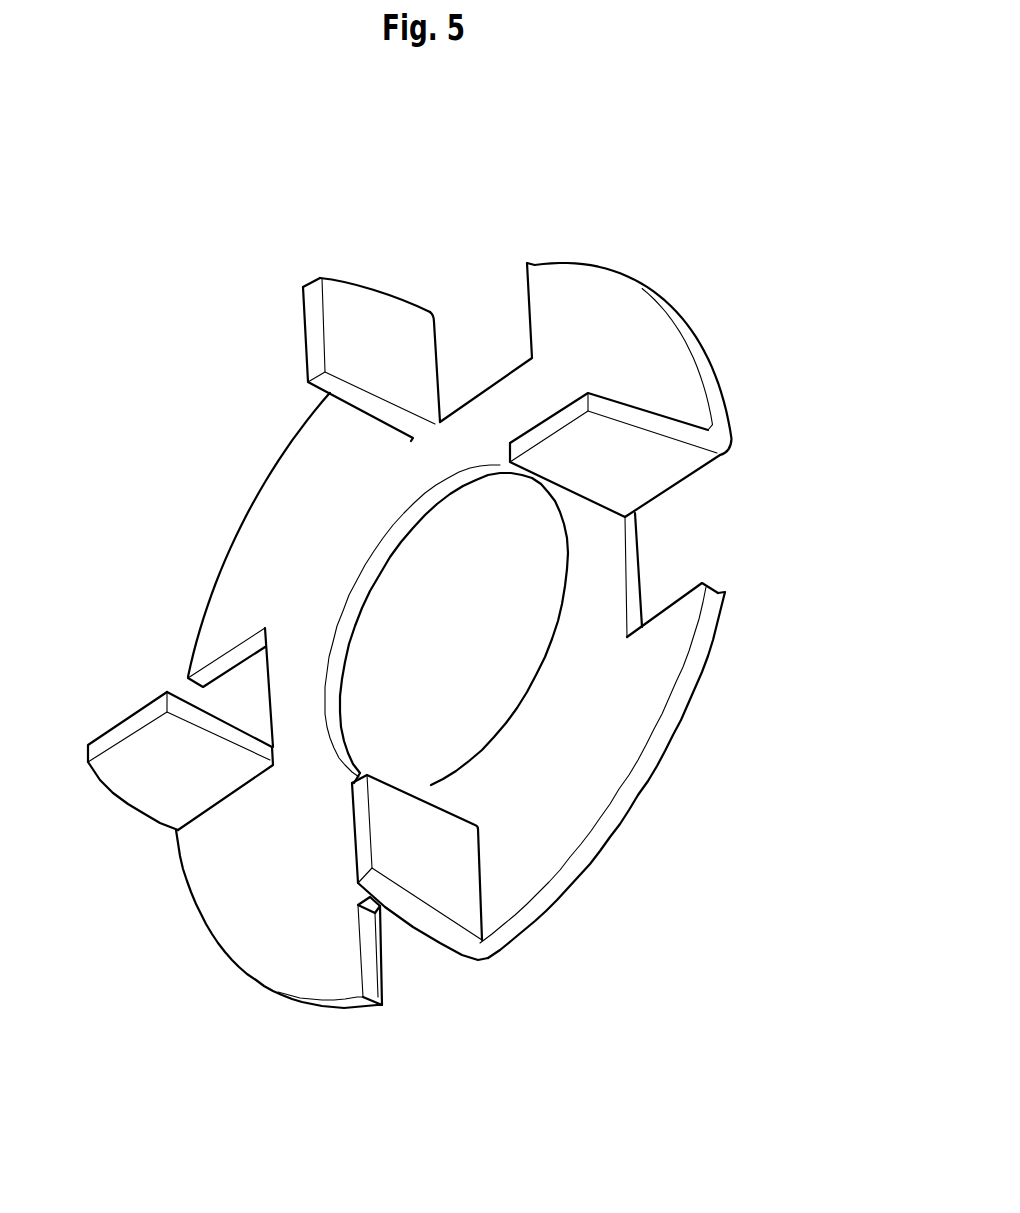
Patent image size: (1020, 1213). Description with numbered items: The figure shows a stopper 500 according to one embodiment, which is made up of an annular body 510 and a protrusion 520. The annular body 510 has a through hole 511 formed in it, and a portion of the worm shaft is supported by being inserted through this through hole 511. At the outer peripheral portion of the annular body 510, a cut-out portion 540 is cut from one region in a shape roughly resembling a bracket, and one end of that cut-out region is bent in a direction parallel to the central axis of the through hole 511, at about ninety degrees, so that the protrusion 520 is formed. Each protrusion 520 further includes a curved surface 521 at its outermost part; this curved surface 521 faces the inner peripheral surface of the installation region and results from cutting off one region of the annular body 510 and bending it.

The stopper 500 is at (180, 153).
The annular body 510 is at (287, 495).
The through hole 511 is at (464, 629).
The protrusion 520 is at (384, 313).
The curved surface 521 is at (337, 278).
The cut-out portion 540 is at (518, 343).